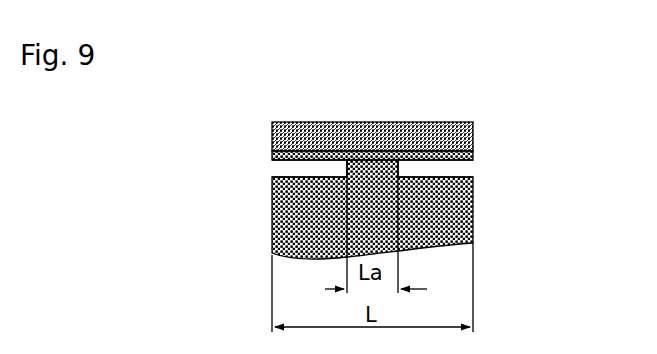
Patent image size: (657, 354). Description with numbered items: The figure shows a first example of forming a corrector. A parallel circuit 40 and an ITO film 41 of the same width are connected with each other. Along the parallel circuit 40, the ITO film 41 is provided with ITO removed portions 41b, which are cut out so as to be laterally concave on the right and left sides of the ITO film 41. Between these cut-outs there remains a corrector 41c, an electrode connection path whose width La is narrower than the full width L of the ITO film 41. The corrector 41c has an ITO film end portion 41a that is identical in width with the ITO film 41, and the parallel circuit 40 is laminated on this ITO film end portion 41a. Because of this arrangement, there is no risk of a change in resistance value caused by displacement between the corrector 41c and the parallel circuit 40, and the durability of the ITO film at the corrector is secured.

The parallel circuit 40 is at (473, 130).
The ITO film 41 is at (473, 220).
The ITO film end portion 41a is at (442, 160).
The ITO removed portions 41b is at (270, 167).
The corrector 41c is at (345, 170).